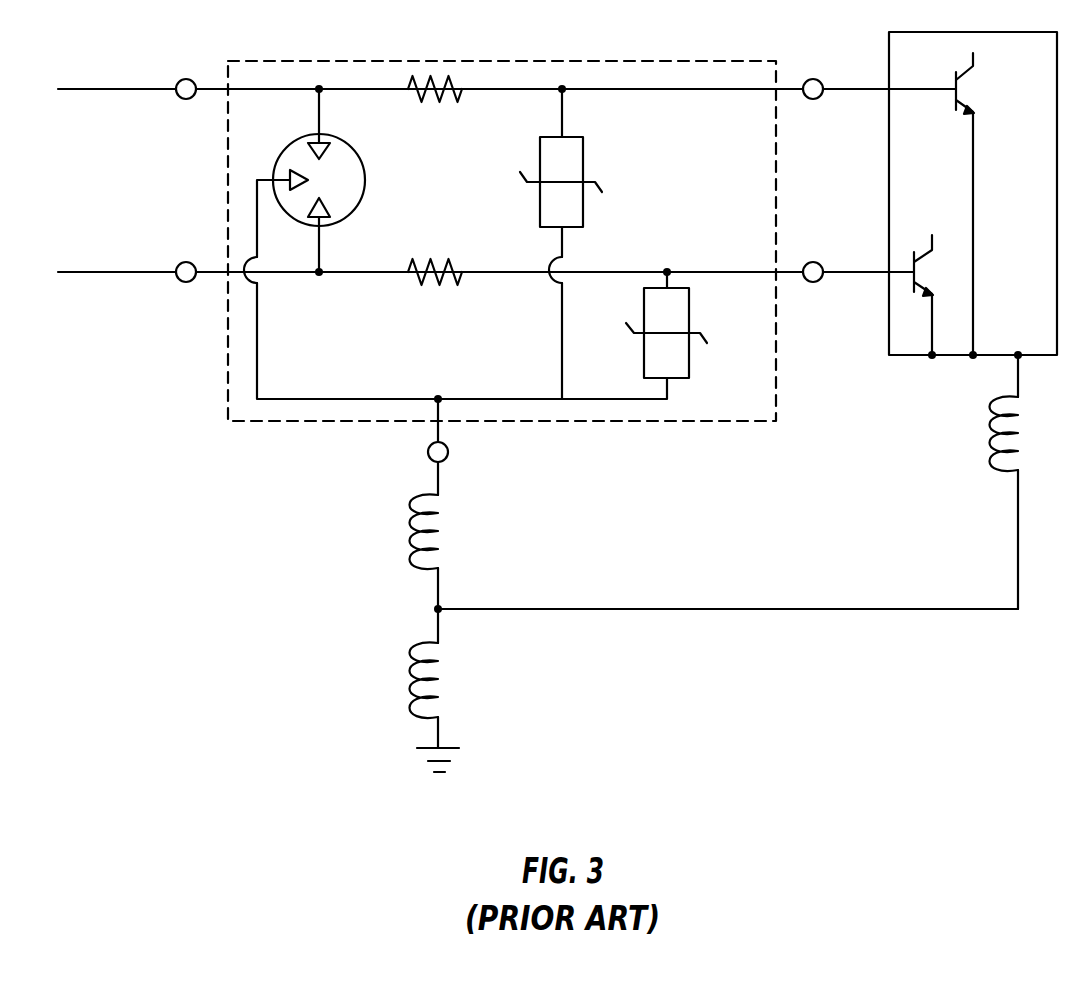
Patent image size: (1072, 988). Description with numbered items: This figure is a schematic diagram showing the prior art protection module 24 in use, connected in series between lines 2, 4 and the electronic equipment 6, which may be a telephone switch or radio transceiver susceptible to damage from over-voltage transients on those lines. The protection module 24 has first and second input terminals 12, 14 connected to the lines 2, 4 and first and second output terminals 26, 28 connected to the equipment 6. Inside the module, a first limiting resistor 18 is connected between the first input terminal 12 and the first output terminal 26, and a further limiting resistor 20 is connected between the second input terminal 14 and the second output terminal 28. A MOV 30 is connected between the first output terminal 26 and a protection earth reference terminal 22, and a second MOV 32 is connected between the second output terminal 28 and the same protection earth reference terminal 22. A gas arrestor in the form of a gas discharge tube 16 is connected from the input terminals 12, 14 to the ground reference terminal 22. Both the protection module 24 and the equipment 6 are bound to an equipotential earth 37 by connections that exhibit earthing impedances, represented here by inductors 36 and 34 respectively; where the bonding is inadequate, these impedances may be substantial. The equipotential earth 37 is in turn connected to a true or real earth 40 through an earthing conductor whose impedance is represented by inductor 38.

The line 2 is at (108, 89).
The line 4 is at (108, 272).
The electronic equipment 6 is at (906, 357).
The first input terminal 12 is at (181, 81).
The second input terminal 14 is at (180, 282).
The gas discharge tube 16 is at (292, 139).
The first limiting resistor 18 is at (440, 100).
The further limiting resistor 20 is at (432, 286).
The protection earth reference terminal 22 is at (429, 456).
The protection module 24 is at (256, 476).
The first output terminal 26 is at (818, 80).
The second output terminal 28 is at (816, 283).
The MOV 30 is at (584, 155).
The second MOV 32 is at (691, 360).
The inductor 34 is at (990, 443).
The inductor 36 is at (410, 525).
The equipotential earth 37 is at (813, 609).
The inductor 38 is at (410, 672).
The true earth 40 is at (428, 762).